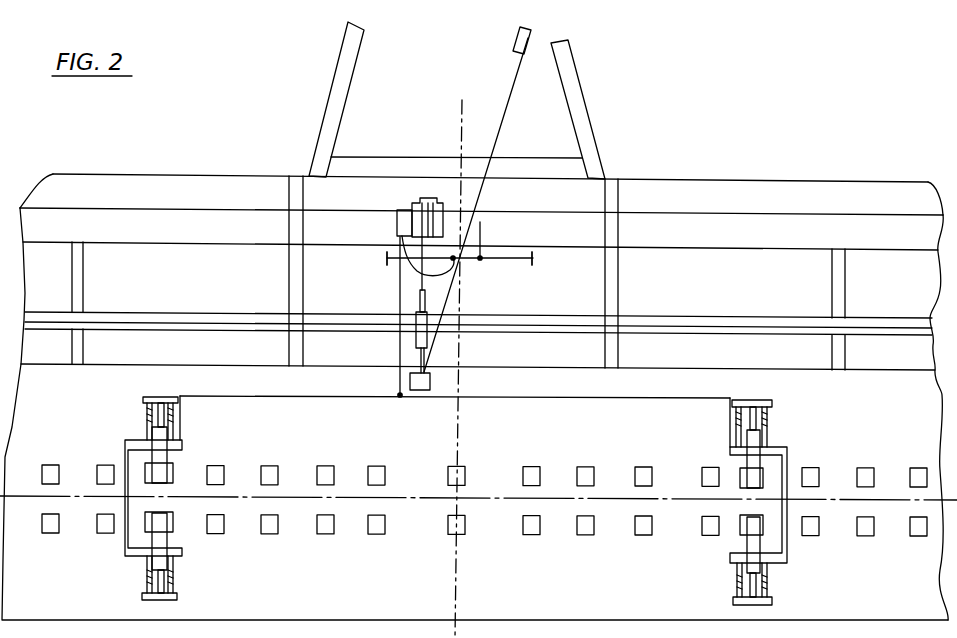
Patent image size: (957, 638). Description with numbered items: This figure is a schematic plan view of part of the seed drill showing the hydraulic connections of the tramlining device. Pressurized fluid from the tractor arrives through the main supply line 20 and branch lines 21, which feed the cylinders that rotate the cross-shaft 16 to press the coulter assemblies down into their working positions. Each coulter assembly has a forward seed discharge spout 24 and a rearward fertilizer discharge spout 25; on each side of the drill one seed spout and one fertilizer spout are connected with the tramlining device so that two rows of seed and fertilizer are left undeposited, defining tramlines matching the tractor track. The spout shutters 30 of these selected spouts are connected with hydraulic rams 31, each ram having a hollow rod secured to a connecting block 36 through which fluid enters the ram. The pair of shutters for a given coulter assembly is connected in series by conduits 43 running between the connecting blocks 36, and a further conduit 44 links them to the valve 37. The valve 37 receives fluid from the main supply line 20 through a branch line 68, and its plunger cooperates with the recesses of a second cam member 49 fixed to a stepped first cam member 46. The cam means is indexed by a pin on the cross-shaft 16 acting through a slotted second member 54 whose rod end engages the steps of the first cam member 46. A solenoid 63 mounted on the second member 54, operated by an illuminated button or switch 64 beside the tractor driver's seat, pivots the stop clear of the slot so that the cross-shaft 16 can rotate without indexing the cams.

The cross-shaft 16 is at (693, 323).
The line 20 is at (483, 228).
The branch lines 21 is at (390, 265).
The seed discharge spout 24 is at (585, 466).
The fertilizer discharge spout 25 is at (582, 535).
The spout shutters 30 is at (125, 455).
The hydraulic rams 31 is at (160, 410).
The connecting block 36 is at (180, 448).
The valve 37 is at (397, 226).
The conduits 43 is at (220, 396).
The further conduit 44 is at (400, 376).
The first cam member 46 is at (407, 212).
The second cam member 49 is at (430, 200).
The second member 54 is at (422, 300).
The solenoid 63 is at (413, 390).
The illuminated button or switch 64 is at (517, 47).
The branch line 68 is at (414, 266).